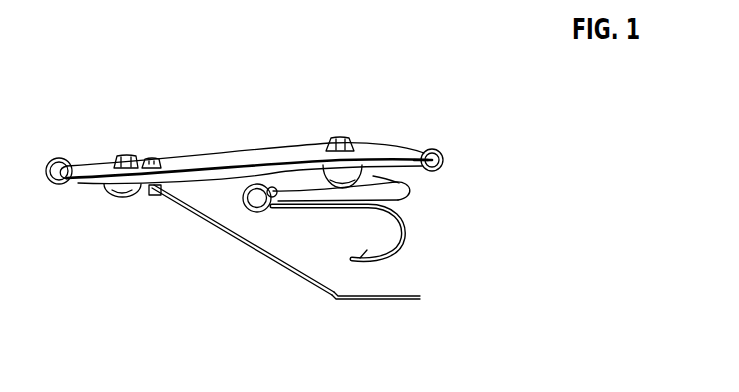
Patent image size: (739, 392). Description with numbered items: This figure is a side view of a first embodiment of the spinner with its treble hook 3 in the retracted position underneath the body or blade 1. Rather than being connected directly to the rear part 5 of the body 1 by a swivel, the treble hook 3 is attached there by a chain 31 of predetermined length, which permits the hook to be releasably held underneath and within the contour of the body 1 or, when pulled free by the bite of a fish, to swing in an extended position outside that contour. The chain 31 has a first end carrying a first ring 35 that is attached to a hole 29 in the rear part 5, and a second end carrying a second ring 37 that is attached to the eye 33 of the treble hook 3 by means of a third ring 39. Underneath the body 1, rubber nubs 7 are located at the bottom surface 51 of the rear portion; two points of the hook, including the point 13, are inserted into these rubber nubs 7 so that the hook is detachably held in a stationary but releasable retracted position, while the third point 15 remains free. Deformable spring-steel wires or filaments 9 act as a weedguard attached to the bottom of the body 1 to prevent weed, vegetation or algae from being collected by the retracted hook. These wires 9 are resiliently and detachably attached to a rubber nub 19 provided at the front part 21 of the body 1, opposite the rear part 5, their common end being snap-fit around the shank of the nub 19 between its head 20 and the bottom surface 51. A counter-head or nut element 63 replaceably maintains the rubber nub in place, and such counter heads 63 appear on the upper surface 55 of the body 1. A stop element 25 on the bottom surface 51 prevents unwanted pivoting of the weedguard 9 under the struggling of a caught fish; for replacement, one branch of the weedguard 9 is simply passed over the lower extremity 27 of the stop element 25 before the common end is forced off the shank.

The body or blade 1 is at (278, 157).
The treble hook 3 is at (318, 212).
The rear part 5 is at (424, 150).
The rubber nubs 7 is at (343, 168).
The spring-steel wires or filaments 9 is at (358, 300).
The point 13 is at (350, 176).
The third point 15 is at (353, 262).
The rubber nub 19 is at (129, 205).
The head 20 is at (111, 197).
The front part 21 is at (93, 162).
The stop element 25 is at (154, 158).
The lower extremity 27 is at (156, 197).
The hole 29 is at (430, 149).
The chain 31 is at (415, 183).
The eye 33 is at (272, 213).
The first ring 35 is at (443, 157).
The second ring 37 is at (296, 160).
The third ring 39 is at (247, 212).
The bottom surface 51 is at (203, 184).
The upper surface 55 is at (218, 155).
The counter-head or nut element 63 is at (120, 156).